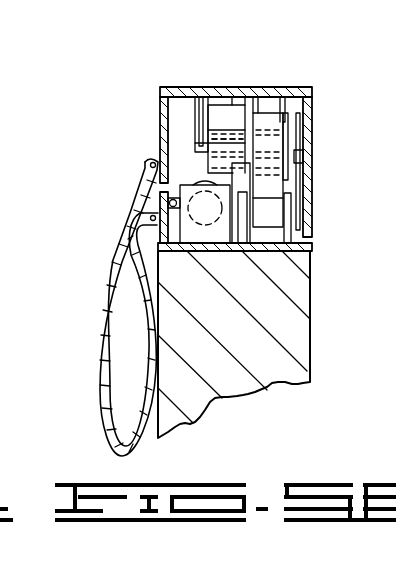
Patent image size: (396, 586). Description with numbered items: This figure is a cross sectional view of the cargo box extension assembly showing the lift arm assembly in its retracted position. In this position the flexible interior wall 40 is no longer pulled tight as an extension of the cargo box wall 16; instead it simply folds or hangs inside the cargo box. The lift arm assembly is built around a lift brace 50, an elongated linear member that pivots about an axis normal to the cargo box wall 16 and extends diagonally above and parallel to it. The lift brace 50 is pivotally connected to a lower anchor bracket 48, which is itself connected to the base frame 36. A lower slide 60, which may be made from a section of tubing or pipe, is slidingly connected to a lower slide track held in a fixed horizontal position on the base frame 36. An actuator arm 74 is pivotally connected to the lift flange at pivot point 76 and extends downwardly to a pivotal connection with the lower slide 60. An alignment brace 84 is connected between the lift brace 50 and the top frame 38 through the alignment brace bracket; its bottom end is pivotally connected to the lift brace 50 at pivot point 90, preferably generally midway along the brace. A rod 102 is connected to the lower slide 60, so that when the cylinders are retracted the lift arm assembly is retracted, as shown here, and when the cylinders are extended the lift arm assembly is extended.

The cargo box wall 16 is at (298, 335).
The base frame 36 is at (285, 258).
The top frame 38 is at (190, 87).
The flexible interior wall 40 is at (102, 335).
The lower anchor bracket 48 is at (291, 228).
The lift brace 50 is at (263, 117).
The lower slide 60 is at (195, 185).
The actuator arm 74 is at (295, 192).
The pivot point 76 is at (302, 156).
The alignment brace 84 is at (200, 145).
The pivot point 90 is at (200, 172).
The rod 102 is at (162, 194).